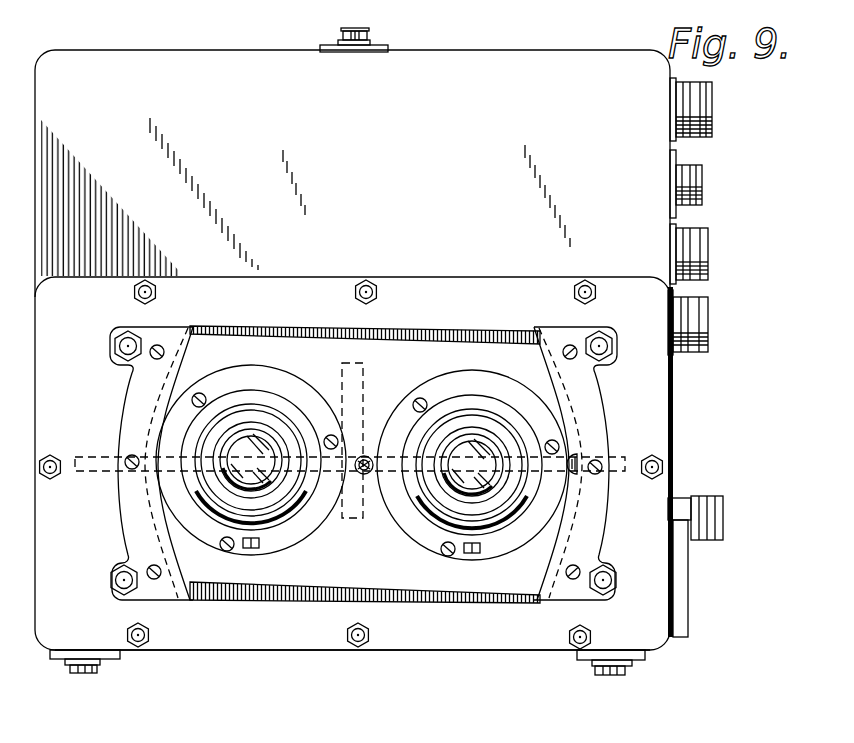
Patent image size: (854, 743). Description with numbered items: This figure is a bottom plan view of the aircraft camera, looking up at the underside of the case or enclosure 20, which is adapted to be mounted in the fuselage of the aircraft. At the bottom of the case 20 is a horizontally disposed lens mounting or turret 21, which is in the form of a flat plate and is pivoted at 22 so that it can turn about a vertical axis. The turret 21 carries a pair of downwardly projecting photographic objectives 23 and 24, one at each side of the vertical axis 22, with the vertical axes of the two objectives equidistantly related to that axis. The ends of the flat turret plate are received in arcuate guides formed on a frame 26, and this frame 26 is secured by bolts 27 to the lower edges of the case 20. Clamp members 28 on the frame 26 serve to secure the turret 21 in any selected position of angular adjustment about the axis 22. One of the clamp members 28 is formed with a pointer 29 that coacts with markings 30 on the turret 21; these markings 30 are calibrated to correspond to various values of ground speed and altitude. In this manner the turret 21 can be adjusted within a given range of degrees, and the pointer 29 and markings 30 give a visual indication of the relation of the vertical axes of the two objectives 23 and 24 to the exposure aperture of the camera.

The case 20 is at (482, 238).
The lens mounting 21 is at (362, 570).
The pivot 22 is at (367, 455).
The photographic objective 23 is at (265, 427).
The photographic objective 24 is at (468, 452).
The frame 26 is at (263, 634).
The bolts 27 is at (48, 480).
The clamp members 28 is at (124, 411).
The pointer 29 is at (592, 463).
The markings 30 is at (571, 473).